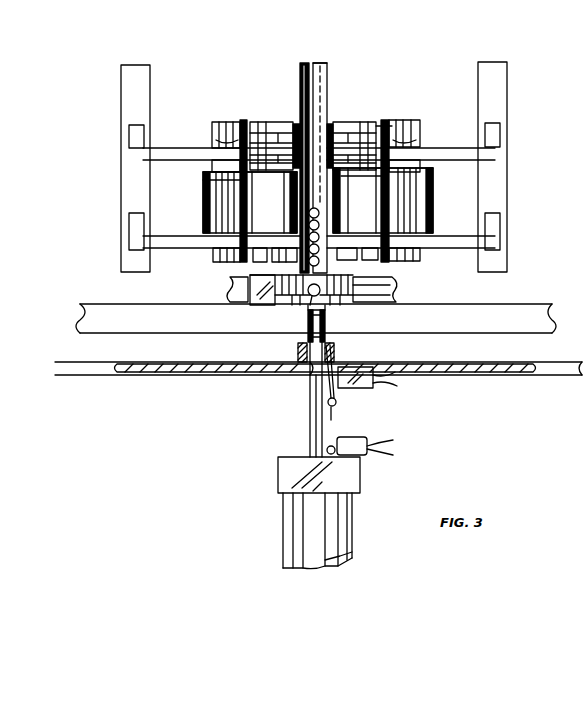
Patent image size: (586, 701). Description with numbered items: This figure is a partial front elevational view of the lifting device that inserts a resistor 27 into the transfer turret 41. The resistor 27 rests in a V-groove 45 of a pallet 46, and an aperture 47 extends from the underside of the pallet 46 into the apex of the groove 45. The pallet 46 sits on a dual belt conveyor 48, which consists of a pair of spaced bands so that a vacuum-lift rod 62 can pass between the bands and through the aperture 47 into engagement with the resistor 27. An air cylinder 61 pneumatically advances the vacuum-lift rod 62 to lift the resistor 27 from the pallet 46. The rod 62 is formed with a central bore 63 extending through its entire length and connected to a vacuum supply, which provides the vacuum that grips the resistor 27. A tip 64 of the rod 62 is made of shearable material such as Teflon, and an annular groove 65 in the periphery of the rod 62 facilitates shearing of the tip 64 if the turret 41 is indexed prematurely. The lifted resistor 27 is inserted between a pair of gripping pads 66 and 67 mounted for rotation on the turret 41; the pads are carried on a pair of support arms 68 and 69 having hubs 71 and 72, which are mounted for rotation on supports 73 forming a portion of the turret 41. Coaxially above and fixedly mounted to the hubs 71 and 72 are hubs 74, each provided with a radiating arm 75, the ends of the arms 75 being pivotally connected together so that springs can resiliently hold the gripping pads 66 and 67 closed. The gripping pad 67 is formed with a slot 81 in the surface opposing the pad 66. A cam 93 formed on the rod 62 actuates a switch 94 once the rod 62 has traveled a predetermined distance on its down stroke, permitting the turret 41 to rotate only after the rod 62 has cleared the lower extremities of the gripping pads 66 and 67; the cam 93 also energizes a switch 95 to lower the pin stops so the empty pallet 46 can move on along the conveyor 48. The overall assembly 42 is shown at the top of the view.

The electromagnetic actuator assembly 42 is at (110, 71).
The slot 81 is at (320, 70).
The gripping pad 67 is at (150, 92).
The gripping pad 66 is at (483, 62).
The hub 74 is at (228, 126).
The radiating arm 75 is at (280, 126).
The turret 41 is at (386, 113).
The support arm 68 is at (163, 150).
The hub 71 is at (212, 162).
The support 73 is at (204, 197).
The resistor 27 is at (300, 210).
The support arm 69 is at (178, 244).
The hub 72 is at (213, 255).
The annular groove 65 is at (311, 300).
The tip 64 is at (308, 313).
The central bore 63 is at (326, 322).
The pallet 46 is at (298, 350).
The V-groove 45 is at (334, 348).
The aperture 47 is at (309, 373).
The dual belt conveyor 48 is at (550, 372).
The vacuum-lift rod 62 is at (309, 392).
The switch 94 is at (364, 389).
The cam 93 is at (331, 415).
The switch 95 is at (352, 437).
The air cylinder 61 is at (348, 552).